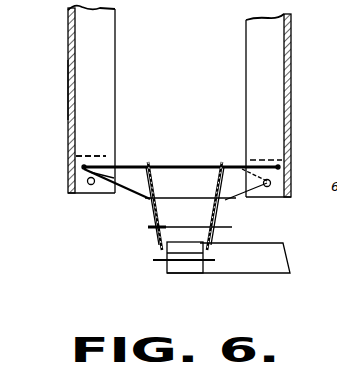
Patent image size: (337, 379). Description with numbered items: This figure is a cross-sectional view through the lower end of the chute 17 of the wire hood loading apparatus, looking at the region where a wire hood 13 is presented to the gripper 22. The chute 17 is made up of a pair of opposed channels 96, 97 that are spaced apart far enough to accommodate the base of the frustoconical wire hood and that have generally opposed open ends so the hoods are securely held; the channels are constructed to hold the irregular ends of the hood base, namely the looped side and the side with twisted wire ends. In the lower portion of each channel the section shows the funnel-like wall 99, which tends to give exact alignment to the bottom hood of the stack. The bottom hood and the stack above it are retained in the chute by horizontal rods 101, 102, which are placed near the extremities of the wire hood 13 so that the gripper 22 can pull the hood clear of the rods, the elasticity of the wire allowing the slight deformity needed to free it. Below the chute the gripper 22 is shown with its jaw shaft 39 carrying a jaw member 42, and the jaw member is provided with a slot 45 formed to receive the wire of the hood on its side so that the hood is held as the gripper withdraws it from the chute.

The chute 17 is at (68, 40).
The channel 96 is at (70, 64).
The channel 97 is at (293, 77).
The funnel-like wall 99 is at (100, 157).
The horizontal rod 101 is at (90, 186).
The horizontal rod 102 is at (266, 189).
The wire hood 13 is at (141, 198).
The gripper 22 is at (170, 275).
The jaw shaft 39 is at (280, 249).
The jaw member 42 is at (200, 273).
The slot 45 is at (165, 262).